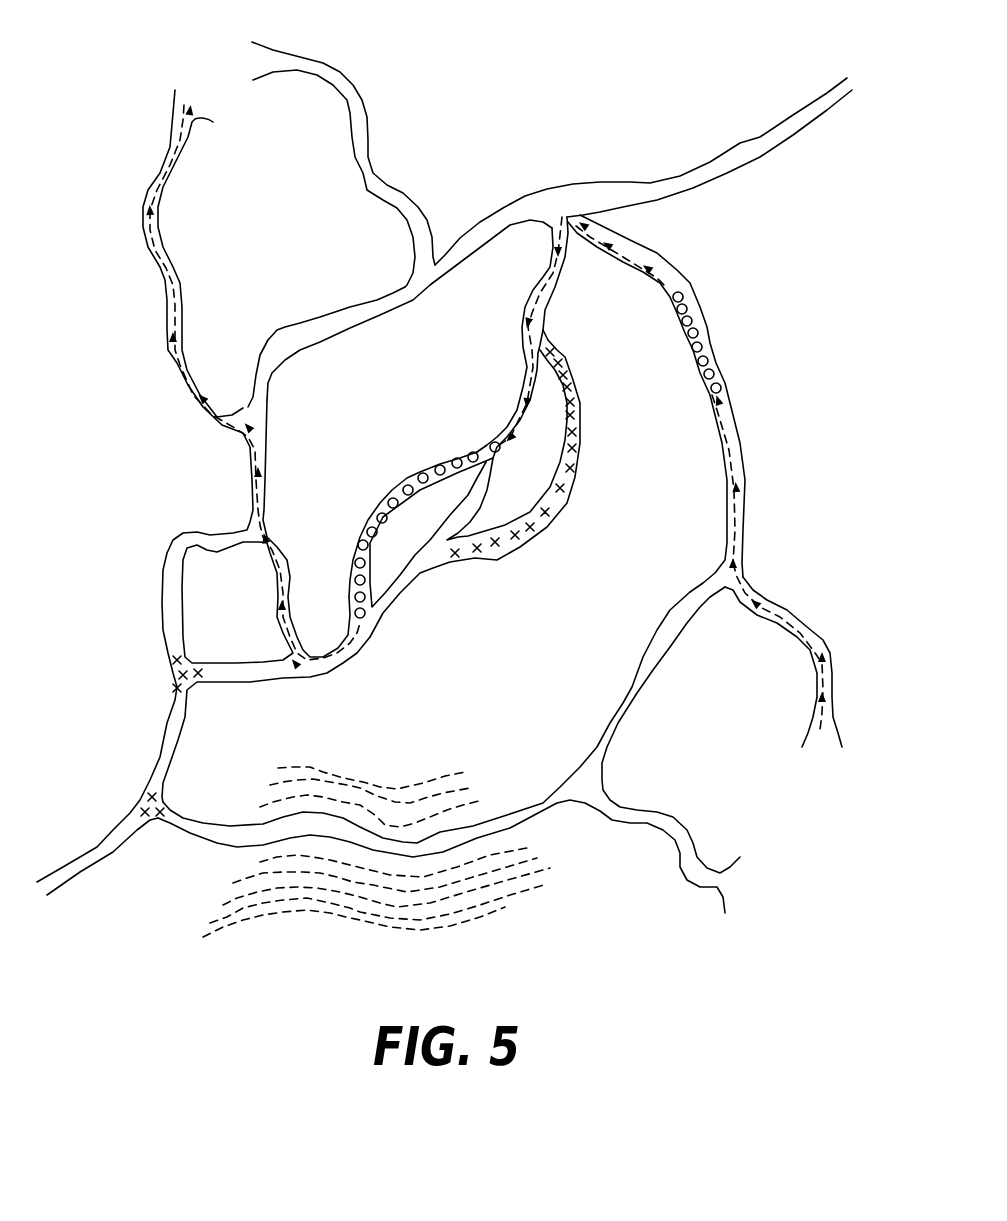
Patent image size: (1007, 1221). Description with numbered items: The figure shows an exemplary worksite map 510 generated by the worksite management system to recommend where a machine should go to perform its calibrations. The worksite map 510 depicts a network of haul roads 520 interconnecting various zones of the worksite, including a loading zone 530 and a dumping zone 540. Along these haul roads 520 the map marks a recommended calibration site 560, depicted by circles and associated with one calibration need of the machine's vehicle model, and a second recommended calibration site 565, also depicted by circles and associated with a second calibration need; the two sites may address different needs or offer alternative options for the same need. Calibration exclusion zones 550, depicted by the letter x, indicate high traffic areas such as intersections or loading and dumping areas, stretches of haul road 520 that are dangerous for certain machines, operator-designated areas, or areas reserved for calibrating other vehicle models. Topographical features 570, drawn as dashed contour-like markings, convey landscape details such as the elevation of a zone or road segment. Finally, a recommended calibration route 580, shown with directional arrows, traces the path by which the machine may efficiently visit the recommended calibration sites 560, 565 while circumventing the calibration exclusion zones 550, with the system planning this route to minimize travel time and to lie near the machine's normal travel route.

The worksite map 510 is at (586, 96).
The haul roads 520 is at (289, 305).
The loading zone 530 is at (798, 810).
The dumping zone 540 is at (203, 47).
The calibration exclusion zones 550 is at (613, 440).
The recommended calibration site 560 is at (740, 320).
The second recommended calibration site 565 is at (395, 455).
The topographical features 570 is at (432, 760).
The recommended calibration route 580 is at (166, 283).